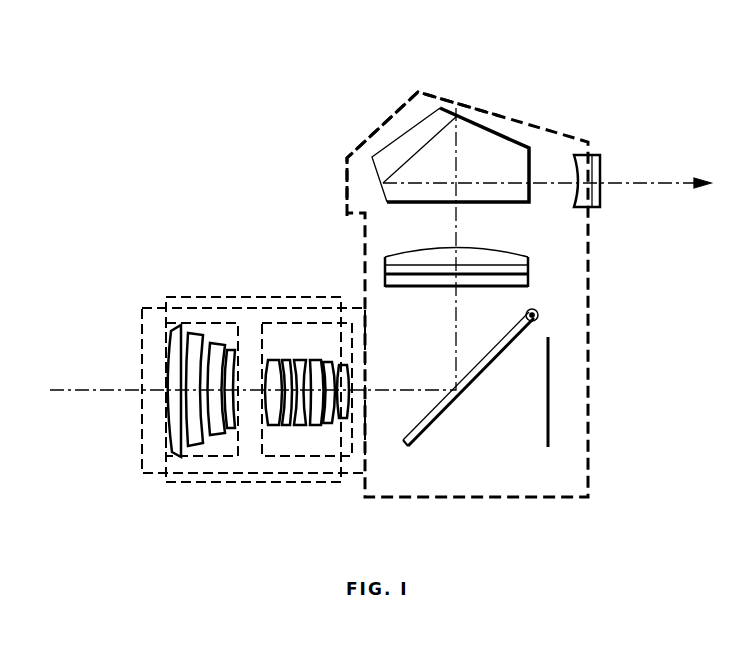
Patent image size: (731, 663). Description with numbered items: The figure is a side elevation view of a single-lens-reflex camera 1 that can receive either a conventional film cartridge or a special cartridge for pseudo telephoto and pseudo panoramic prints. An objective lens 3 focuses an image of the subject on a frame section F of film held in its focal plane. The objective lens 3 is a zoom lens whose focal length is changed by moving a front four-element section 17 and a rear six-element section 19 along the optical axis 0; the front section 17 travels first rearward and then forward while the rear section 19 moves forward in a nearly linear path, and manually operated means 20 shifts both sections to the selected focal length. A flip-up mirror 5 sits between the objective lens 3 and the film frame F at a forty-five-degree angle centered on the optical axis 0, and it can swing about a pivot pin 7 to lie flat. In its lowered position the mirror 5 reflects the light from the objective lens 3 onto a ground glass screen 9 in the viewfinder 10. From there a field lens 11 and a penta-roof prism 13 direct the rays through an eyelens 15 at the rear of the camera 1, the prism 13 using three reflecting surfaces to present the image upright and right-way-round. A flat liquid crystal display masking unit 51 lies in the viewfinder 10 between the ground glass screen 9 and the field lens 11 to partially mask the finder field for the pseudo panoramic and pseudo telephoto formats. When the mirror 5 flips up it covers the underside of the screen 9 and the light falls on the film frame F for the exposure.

The camera 1 is at (590, 437).
The objective lens 3 is at (140, 442).
The flip-up mirror 5 is at (437, 425).
The pivot pin 7 is at (526, 316).
The ground glass screen 9 is at (513, 282).
The viewfinder 10 is at (363, 182).
The field lens 11 is at (495, 252).
The penta-roof prism 13 is at (437, 123).
The eyelens 15 is at (600, 163).
The front four-element section 17 is at (215, 330).
The rear six-element section 19 is at (307, 330).
The manually operated means 20 is at (200, 482).
The liquid crystal display masking unit 51 is at (527, 268).
The optical axis 0 is at (72, 390).
The film frame F is at (547, 425).